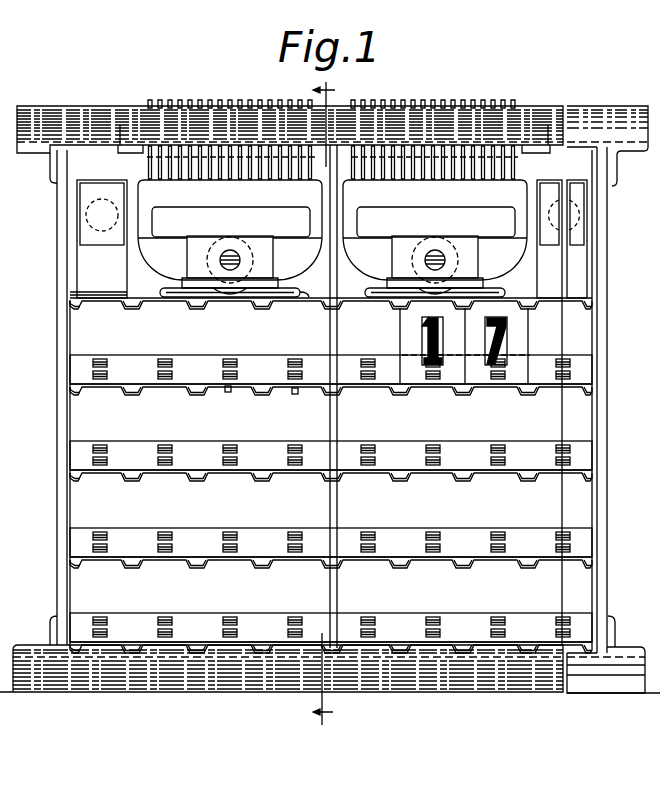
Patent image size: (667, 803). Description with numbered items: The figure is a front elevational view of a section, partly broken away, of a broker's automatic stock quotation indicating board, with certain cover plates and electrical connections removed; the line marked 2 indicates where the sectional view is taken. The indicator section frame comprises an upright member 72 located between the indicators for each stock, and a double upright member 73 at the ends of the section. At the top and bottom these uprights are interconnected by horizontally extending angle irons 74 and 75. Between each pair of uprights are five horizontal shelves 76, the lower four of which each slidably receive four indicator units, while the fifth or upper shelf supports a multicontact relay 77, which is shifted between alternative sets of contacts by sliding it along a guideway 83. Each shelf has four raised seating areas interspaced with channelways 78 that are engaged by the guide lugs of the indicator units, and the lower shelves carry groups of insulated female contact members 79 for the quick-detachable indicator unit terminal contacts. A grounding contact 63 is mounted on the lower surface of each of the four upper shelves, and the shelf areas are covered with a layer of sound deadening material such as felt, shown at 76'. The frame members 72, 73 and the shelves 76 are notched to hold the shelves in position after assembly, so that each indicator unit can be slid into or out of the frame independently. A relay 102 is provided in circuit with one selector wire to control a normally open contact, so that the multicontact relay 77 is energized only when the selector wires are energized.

The horizontally extending angle iron 74 is at (84, 122).
The section line 2- 2 is at (315, 404).
The double upright member 73 is at (65, 346).
The horizontally extending angle iron 75 is at (177, 678).
The relay 102 is at (88, 263).
The multicontact relay 77 is at (312, 203).
The upright member 72 is at (337, 433).
The guideway 83 is at (307, 292).
The channelway 78 is at (158, 300).
The horizontal shelf 76 is at (331, 475).
The layer of sound deadening material 76' is at (331, 439).
The insulated female contact member 79 is at (170, 376).
The grounding contact 63 is at (230, 391).